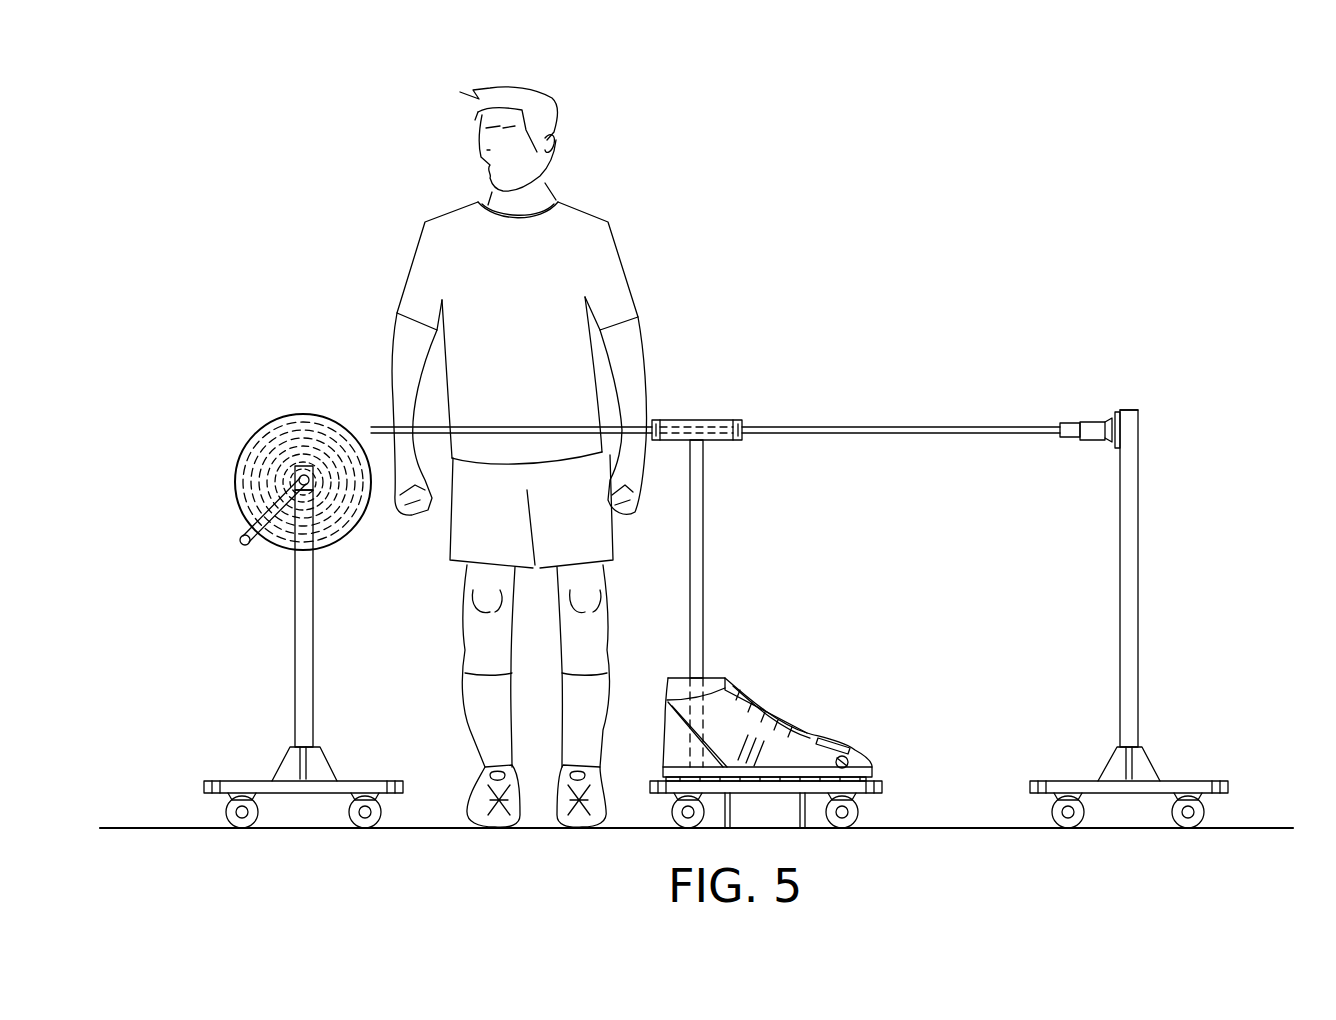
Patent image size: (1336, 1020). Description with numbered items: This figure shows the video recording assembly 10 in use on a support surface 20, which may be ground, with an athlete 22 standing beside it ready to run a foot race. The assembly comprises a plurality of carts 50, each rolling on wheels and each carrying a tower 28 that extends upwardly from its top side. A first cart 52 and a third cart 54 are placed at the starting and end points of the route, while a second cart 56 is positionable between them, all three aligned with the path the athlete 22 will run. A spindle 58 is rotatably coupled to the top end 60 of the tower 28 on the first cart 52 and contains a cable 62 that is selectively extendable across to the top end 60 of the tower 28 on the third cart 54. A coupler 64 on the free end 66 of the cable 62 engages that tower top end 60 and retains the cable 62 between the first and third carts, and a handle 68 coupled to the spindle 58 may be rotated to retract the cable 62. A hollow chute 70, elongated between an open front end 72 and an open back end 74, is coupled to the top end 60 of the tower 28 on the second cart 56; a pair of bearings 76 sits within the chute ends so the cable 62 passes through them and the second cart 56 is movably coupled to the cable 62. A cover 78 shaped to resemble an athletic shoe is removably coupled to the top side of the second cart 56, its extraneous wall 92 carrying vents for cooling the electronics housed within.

The video recording assembly 10 is at (840, 357).
The support surface 20 is at (1268, 828).
The athlete 22 is at (560, 130).
The tower 28 is at (315, 615).
The carts 50 is at (696, 777).
The first cart 52 is at (207, 781).
The third cart 54 is at (1200, 781).
The second cart 56 is at (885, 788).
The spindle 58 is at (268, 418).
The top end 60 is at (306, 466).
The cable 62 is at (512, 427).
The coupler 64 is at (1095, 420).
The free end 66 is at (1062, 420).
The handle 68 is at (240, 540).
The chute 70 is at (741, 416).
The front end 72 is at (742, 440).
The back end 74 is at (655, 420).
The bearings 76 is at (658, 441).
The cover 78 is at (767, 701).
The extraneous wall 92 is at (740, 700).